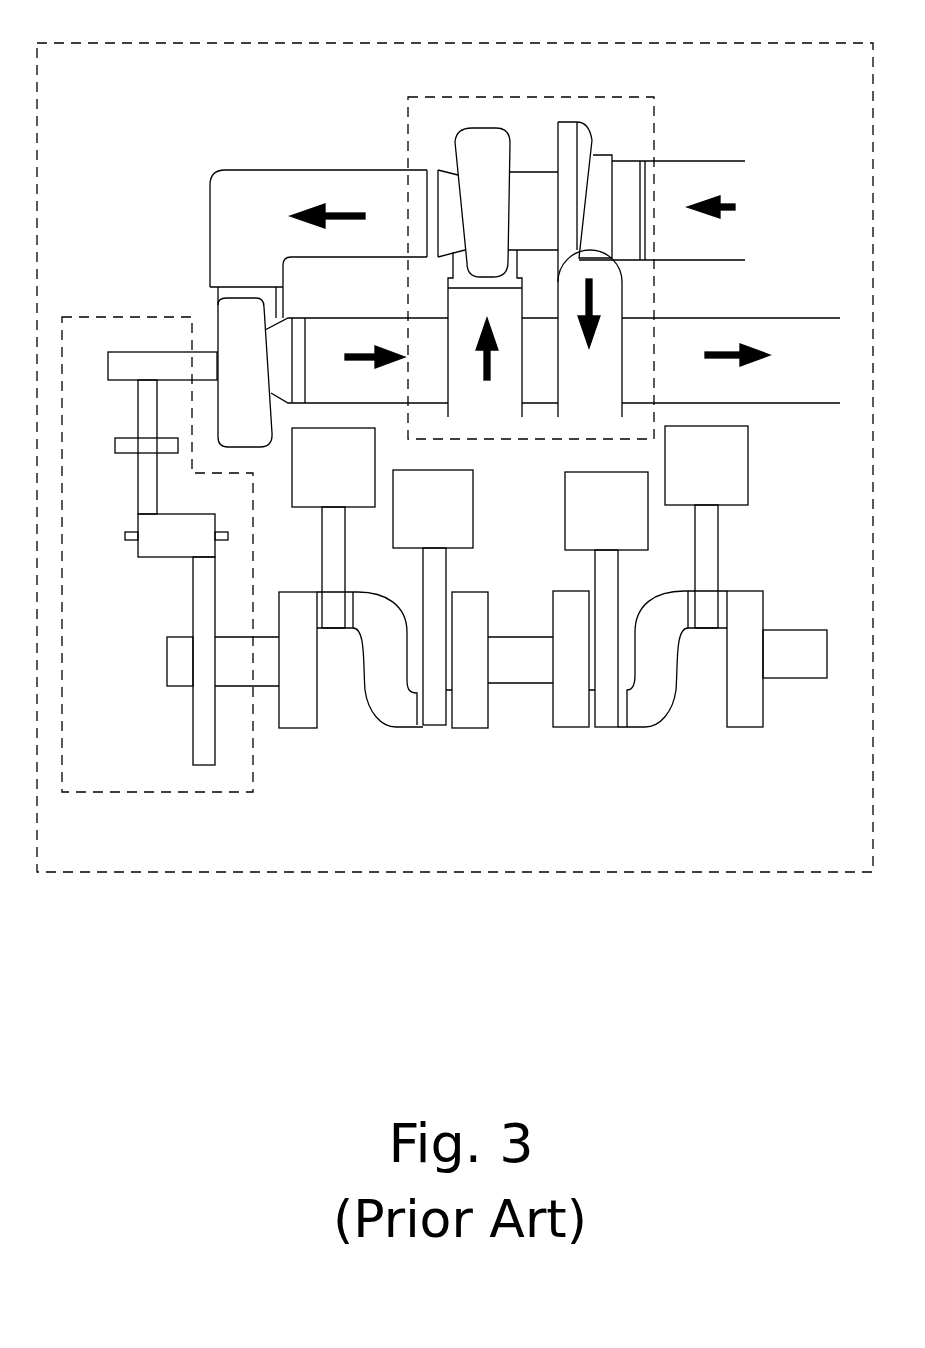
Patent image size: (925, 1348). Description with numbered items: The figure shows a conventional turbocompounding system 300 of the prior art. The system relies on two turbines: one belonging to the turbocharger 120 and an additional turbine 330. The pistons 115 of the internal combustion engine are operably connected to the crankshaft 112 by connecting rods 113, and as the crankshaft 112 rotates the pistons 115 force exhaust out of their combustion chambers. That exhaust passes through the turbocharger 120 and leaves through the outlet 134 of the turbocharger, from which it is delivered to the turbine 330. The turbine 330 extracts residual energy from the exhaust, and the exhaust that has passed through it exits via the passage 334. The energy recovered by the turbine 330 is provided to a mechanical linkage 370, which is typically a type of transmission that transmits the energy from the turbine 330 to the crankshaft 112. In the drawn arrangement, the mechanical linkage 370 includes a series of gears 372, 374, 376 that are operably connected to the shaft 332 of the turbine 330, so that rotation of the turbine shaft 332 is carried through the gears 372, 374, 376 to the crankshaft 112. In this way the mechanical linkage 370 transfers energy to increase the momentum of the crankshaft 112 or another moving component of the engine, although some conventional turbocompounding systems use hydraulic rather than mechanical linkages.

The conventional turbocompounding system 300 is at (712, 43).
The turbocharger 120 is at (655, 115).
The outlet of the turbocharger 134 is at (305, 170).
The turbine 330 is at (212, 292).
The shaft of the turbine 332 is at (212, 352).
The passage 334 is at (378, 316).
The mechanical linkage 370 is at (140, 316).
The gear 372 is at (137, 424).
The gear 374 is at (137, 518).
The gear 376 is at (193, 616).
The piston 115 is at (749, 460).
The connecting rod 113 is at (720, 560).
The crankshaft 112 is at (775, 628).